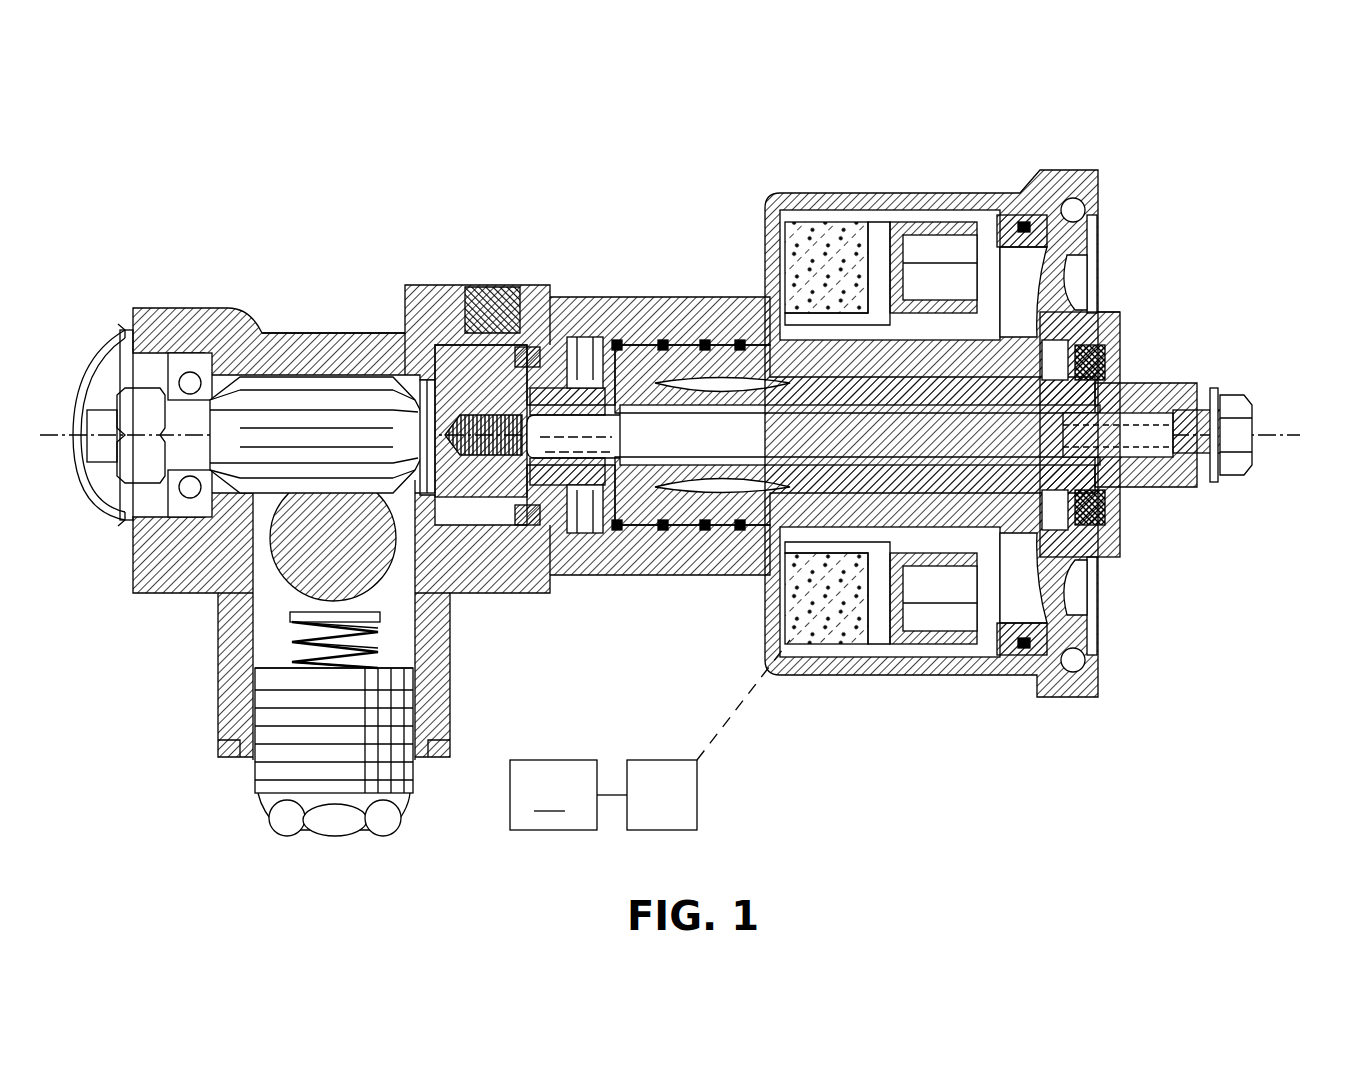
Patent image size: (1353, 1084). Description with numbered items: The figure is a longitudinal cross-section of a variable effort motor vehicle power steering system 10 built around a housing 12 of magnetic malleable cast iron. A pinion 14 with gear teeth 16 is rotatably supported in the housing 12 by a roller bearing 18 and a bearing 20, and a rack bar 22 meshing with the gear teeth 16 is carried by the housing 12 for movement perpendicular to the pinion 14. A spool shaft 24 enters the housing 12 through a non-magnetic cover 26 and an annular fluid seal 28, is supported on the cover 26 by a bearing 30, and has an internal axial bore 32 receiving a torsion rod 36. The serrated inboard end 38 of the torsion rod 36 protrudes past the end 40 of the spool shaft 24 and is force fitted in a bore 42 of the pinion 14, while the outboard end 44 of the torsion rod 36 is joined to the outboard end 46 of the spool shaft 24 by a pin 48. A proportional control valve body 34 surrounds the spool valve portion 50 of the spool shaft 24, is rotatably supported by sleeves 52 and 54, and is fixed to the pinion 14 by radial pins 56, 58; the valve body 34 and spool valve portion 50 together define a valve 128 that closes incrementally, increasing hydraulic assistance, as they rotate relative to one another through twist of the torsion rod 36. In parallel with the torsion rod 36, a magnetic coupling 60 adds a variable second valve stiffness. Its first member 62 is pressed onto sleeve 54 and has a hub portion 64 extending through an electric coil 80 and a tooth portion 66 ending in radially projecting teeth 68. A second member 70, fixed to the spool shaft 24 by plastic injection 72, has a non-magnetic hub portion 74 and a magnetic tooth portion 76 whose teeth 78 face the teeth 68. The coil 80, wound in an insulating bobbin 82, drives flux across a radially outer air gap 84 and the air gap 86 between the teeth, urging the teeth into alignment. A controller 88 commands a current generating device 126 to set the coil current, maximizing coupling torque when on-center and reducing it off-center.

The variable effort motor vehicle power steering system 10 is at (315, 238).
The housing 12 is at (185, 305).
The pinion 14 is at (378, 332).
The gear teeth 16 is at (272, 410).
The roller bearing 18 is at (165, 345).
The bearing 20 is at (480, 520).
The rack bar 22 is at (312, 562).
The spool shaft 24 is at (1155, 482).
The cover 26 is at (1070, 265).
The seal 28 is at (1105, 358).
The bearing 30 is at (1085, 535).
The internal axial bore 32 is at (745, 415).
The proportional control valve body 34 is at (683, 345).
The torsion rod 36 is at (1138, 420).
The serrated inboard end 38 is at (448, 365).
The end of spool shaft 40 is at (553, 388).
The bore 42 is at (492, 430).
The outboard end of torsion rod 44 is at (1248, 410).
The outboard end of spool shaft 46 is at (1225, 466).
The pin 48 is at (1240, 440).
The spool valve portion 50 is at (698, 470).
The sleeve 52 is at (622, 345).
The sleeve 54 is at (760, 540).
The radial pin 56 is at (580, 370).
The radial pin 58 is at (585, 525).
The magnetic coupling 60 is at (985, 128).
The first member 62 is at (862, 318).
The hub portion 64 is at (885, 300).
The tooth portion 66 is at (935, 270).
The teeth 68 is at (935, 520).
The second member 70 is at (985, 625).
The plastic injection 72 is at (1003, 385).
The non-magnetic hub portion 74 is at (1010, 640).
The magnetic tooth portion 76 is at (948, 625).
The teeth 78 is at (930, 600).
The electric coil 80 is at (785, 620).
The insulating bobbin 82 is at (818, 655).
The radially outer air gap 84 is at (940, 600).
The air gap 86 is at (872, 620).
The controller 88 is at (553, 795).
The current generating device 126 is at (680, 795).
The valve 128 is at (642, 192).